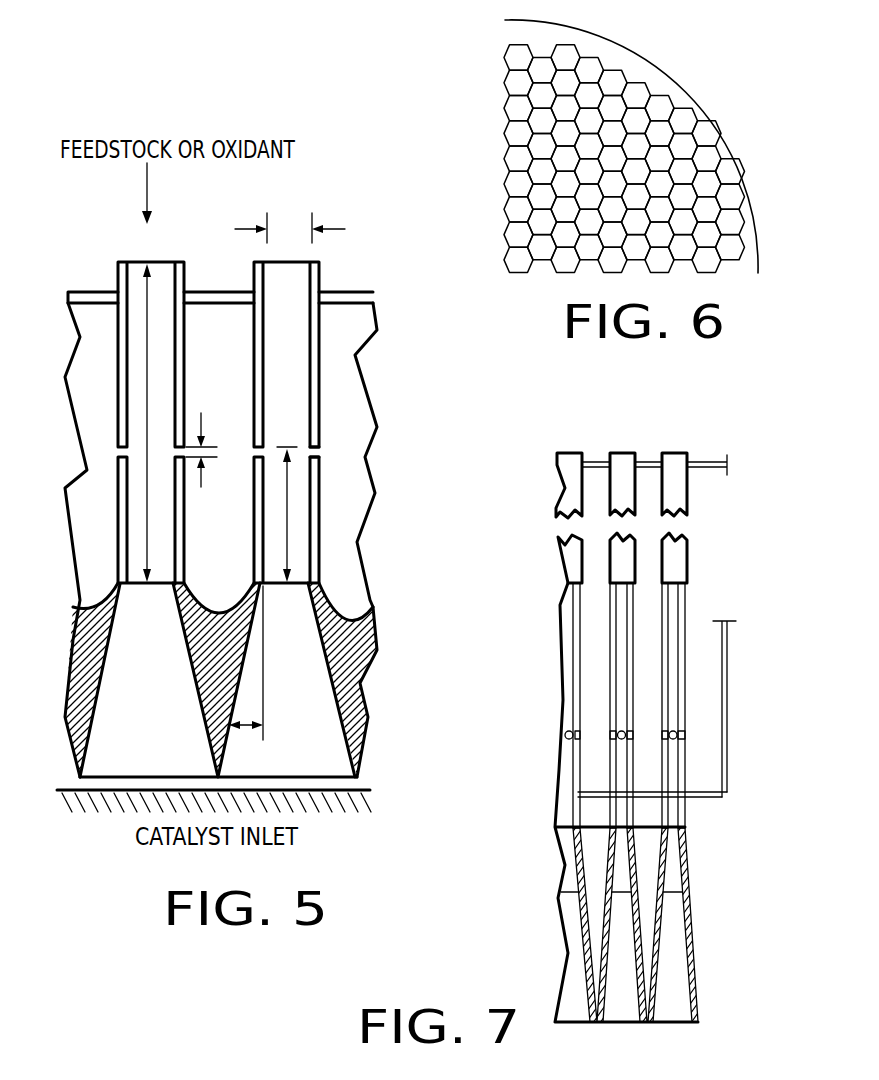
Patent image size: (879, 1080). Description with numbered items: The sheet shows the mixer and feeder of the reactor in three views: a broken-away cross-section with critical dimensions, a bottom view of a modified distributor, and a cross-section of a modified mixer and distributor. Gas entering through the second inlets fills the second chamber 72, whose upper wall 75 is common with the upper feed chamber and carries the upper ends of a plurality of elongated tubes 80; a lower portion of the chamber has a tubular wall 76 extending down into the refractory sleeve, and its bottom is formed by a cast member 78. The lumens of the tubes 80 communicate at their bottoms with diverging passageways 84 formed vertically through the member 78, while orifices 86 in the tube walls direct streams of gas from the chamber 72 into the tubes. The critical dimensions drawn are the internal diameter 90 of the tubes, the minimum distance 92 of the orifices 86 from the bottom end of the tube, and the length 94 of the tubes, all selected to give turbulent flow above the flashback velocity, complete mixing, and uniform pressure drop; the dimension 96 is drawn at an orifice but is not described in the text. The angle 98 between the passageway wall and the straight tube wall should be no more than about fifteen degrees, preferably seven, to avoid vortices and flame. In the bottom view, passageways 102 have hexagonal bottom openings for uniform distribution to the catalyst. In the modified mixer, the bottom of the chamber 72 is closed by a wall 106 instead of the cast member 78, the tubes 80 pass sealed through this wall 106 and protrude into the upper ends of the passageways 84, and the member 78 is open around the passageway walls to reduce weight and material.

In FIG. 5, the second chamber 72 is at (340, 317).
In FIG. 7, the second chamber 72 is at (703, 498).
In FIG. 5, the upper wall 75 is at (93, 293).
In FIG. 7, the upper wall 75 is at (593, 460).
In FIG. 7, the tubular wall 76 is at (727, 700).
In FIG. 5, the cast member 78 is at (357, 639).
In FIG. 6, the cast member 78 is at (653, 63).
In FIG. 7, the cast member 78 is at (692, 907).
In FIG. 5, the elongated tubes 80 is at (331, 271).
In FIG. 7, the elongated tubes 80 is at (688, 552).
In FIG. 5, the passageways 84 is at (312, 713).
In FIG. 7, the passageways 84 is at (672, 970).
In FIG. 5, the orifices 86 is at (318, 450).
In FIG. 7, the orifices 86 is at (622, 732).
In FIG. 5, the internal diameter 90 is at (288, 225).
In FIG. 5, the minimum distance 92 is at (288, 527).
In FIG. 5, the length of the tubes 94 is at (150, 347).
In FIG. 5, the slot width 96 is at (213, 452).
In FIG. 5, the angle 98 is at (242, 730).
In FIG. 6, the passageways with hexagonal bottom openings 102 is at (697, 133).
In FIG. 7, the wall 106 is at (645, 793).